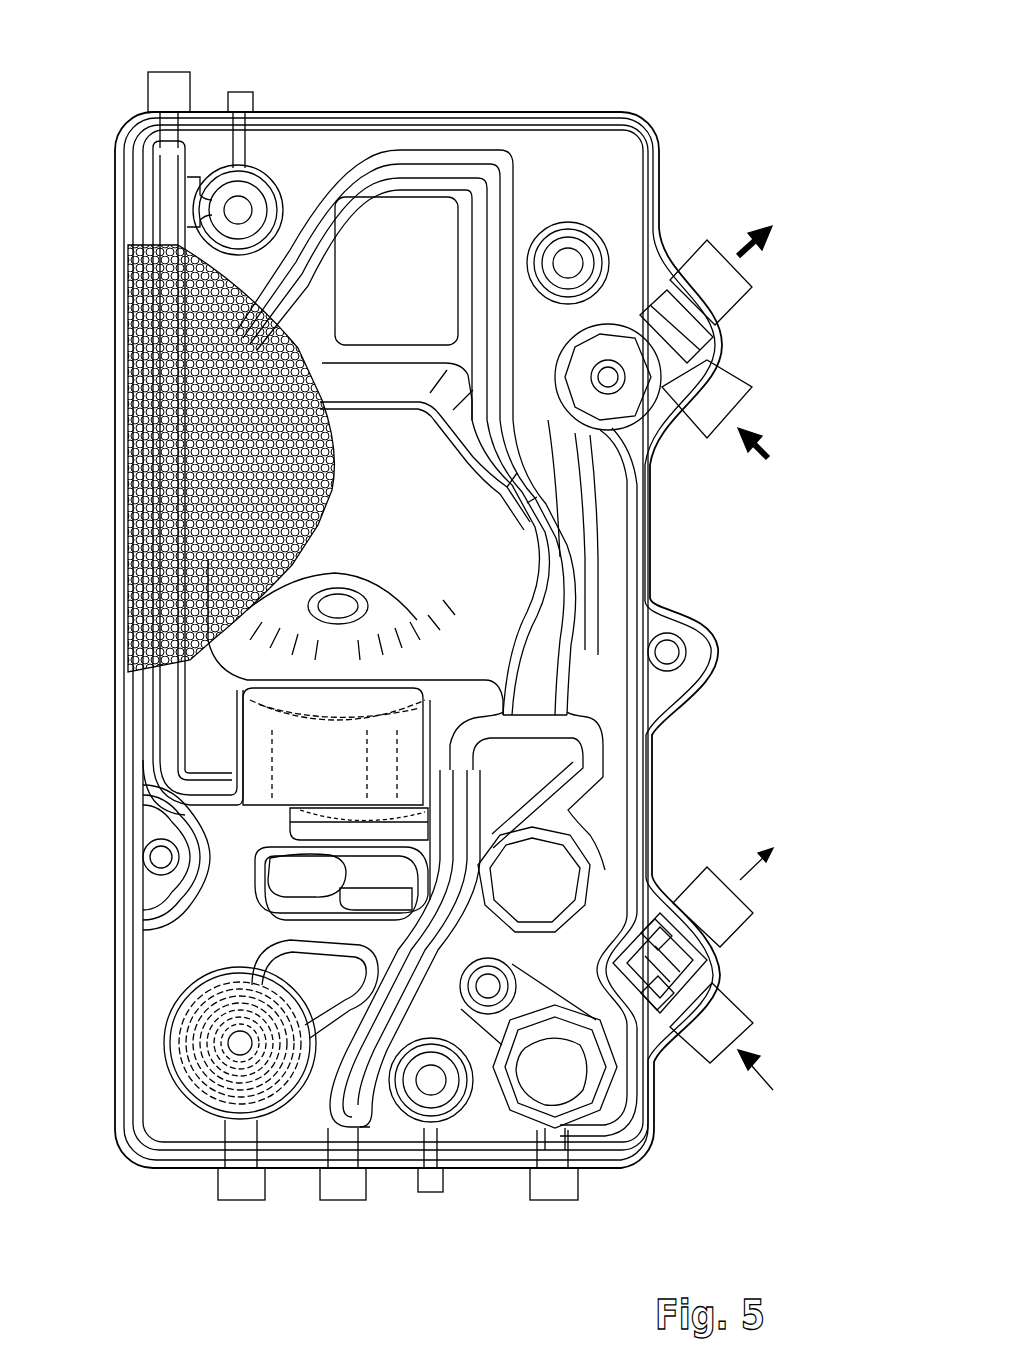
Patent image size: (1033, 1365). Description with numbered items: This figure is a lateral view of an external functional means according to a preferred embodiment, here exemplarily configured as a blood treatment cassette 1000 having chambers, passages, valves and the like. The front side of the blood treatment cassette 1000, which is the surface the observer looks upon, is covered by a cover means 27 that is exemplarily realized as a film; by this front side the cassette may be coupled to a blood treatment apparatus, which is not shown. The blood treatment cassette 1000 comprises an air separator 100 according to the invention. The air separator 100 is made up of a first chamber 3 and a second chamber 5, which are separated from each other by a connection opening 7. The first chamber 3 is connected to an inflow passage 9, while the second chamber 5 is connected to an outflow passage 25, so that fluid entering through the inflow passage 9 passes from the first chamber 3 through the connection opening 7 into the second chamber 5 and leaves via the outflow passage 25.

The blood treatment cassette 1000 is at (645, 96).
The cover means 27 is at (128, 478).
The inflow passage 9 is at (295, 785).
The first chamber 3 is at (158, 770).
The air separator 100 is at (238, 814).
The connection opening 7 is at (265, 880).
The second chamber 5 is at (290, 888).
The outflow passage 25 is at (250, 930).